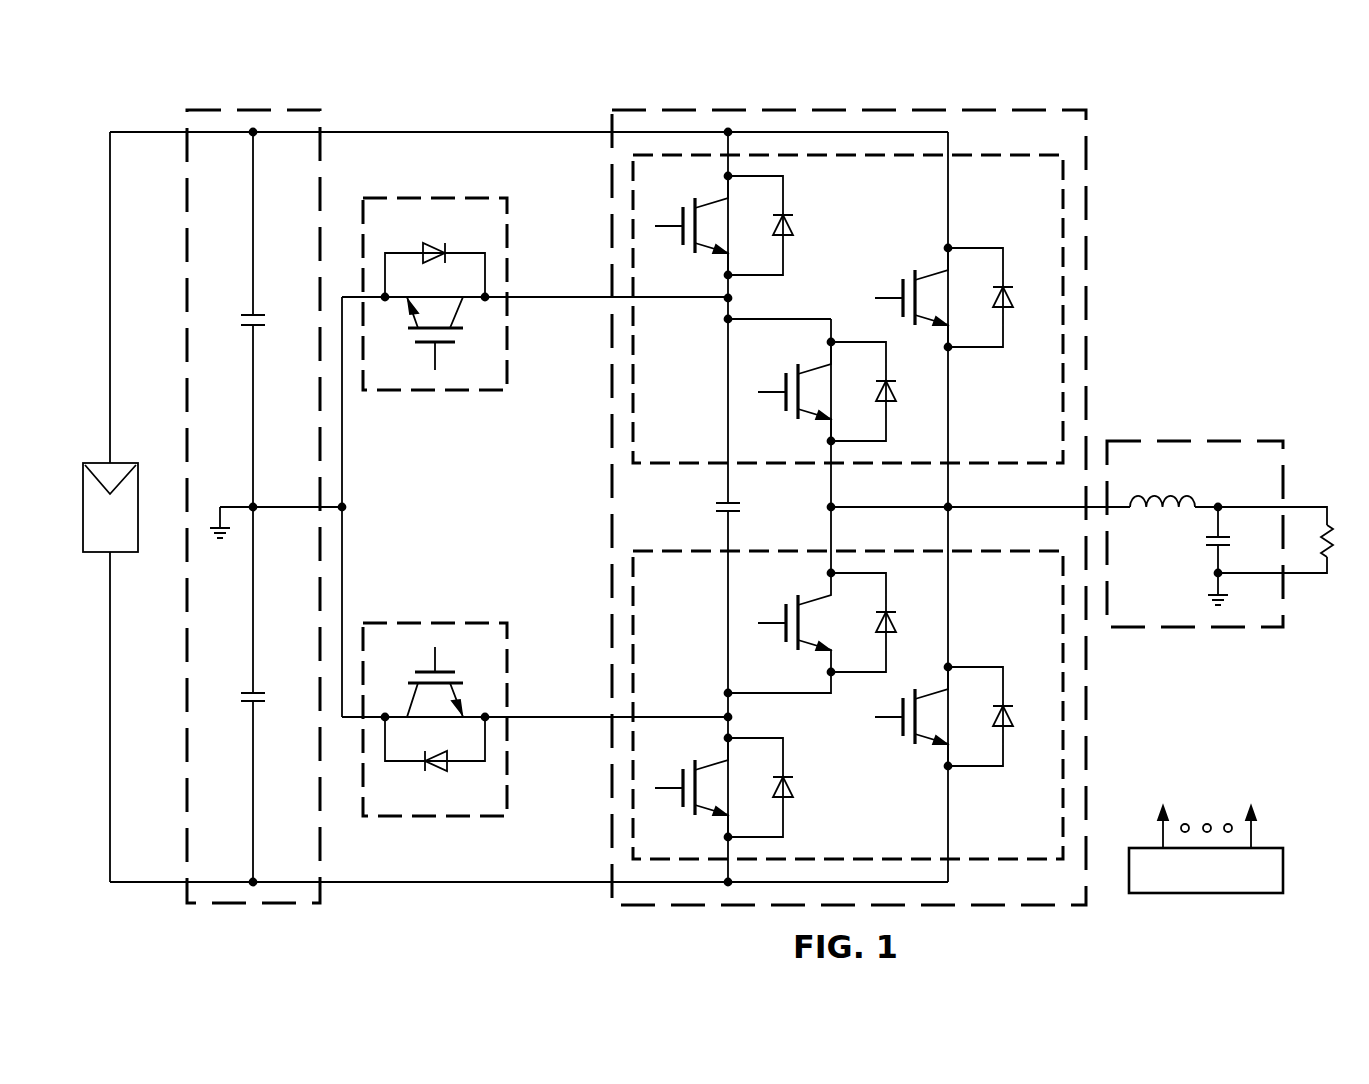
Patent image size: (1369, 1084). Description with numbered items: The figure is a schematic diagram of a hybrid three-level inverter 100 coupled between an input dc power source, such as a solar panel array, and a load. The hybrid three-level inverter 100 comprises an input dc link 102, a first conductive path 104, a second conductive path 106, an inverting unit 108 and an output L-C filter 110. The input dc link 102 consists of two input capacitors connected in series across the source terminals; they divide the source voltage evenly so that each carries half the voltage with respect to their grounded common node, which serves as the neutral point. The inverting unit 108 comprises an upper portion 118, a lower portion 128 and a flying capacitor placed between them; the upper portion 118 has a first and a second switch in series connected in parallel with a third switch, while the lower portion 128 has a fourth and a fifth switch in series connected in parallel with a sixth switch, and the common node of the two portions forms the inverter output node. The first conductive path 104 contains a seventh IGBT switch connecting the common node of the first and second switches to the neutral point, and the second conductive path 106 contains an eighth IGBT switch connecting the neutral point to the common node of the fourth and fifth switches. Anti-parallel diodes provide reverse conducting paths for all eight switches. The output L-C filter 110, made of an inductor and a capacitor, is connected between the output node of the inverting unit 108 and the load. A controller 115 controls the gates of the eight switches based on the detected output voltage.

The hybrid three-level inverter 100 is at (1222, 152).
The input dc link 102 is at (246, 103).
The first conductive path 104 is at (515, 253).
The second conductive path 106 is at (515, 762).
The inverting unit 108 is at (877, 103).
The output inductor-capacitor (L-C) filter 110 is at (1197, 432).
The controller 115 is at (1207, 893).
The upper portion 118 is at (1030, 208).
The lower portion 128 is at (1030, 608).